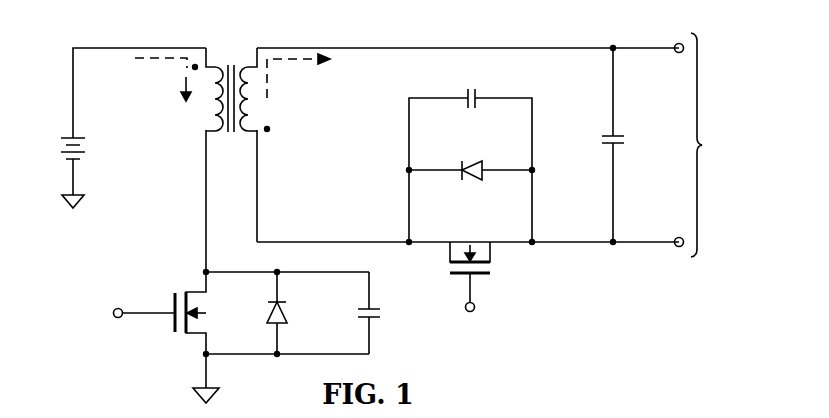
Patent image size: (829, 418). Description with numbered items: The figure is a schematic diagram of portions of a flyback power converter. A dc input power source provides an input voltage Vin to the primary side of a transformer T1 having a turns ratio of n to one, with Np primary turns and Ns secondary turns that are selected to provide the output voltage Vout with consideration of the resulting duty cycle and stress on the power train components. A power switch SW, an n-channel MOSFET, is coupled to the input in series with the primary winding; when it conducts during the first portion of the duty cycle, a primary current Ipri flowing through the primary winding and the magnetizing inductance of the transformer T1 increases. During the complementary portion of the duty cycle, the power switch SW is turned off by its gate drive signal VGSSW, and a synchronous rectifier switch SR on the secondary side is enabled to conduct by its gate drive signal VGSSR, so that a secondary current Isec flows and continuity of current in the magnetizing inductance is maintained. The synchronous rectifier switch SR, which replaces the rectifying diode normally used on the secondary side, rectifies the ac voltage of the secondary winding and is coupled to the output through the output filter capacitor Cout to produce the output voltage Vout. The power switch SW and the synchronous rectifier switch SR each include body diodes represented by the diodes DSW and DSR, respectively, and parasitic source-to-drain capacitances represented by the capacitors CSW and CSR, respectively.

The input voltage Vin is at (88, 162).
The transformer T1 is at (231, 71).
The primary turns Np is at (184, 129).
The secondary turns Ns is at (286, 129).
The primary current Ipri is at (163, 79).
The secondary current Isec is at (298, 76).
The power switch SW is at (177, 337).
The gate drive signal VGSSW is at (65, 313).
The body diode DSW is at (287, 313).
The parasitic source-to-drain capacitance CSW is at (388, 313).
The synchronous rectifier switch SR is at (468, 263).
The gate drive signal VGSSR is at (506, 313).
The body diode DSR is at (470, 153).
The parasitic source-to-drain capacitance CSR is at (470, 147).
The output filter capacitor Cout is at (631, 145).
The output voltage Vout is at (710, 145).